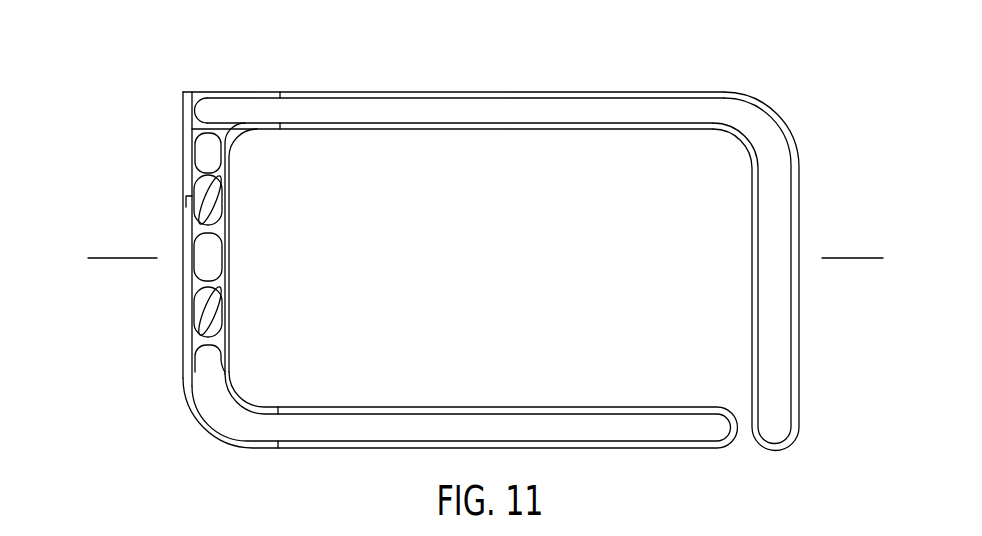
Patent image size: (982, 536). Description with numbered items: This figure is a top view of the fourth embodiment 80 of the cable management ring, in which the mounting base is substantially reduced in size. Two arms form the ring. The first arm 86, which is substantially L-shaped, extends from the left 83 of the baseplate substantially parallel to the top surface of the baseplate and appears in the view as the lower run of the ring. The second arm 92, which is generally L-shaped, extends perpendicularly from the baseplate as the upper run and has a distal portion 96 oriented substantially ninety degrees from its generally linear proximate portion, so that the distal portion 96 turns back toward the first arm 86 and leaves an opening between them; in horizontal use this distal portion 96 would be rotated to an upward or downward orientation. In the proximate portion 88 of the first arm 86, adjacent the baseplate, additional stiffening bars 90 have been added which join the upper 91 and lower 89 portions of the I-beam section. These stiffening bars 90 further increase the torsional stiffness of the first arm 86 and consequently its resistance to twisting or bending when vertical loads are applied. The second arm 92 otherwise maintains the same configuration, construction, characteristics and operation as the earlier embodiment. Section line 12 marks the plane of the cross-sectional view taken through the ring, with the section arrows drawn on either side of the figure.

The fourth embodiment 80 is at (164, 84).
The left of the baseplate 83 is at (182, 207).
The first arm 86 is at (538, 400).
The proximate portion 88 is at (187, 237).
The lower portion 89 is at (228, 258).
The stiffening bars 90 is at (221, 207).
The upper portion 91 is at (187, 273).
The second arm 92 is at (489, 84).
The distal portion 96 is at (800, 326).
The section line 12- 12 is at (97, 267).